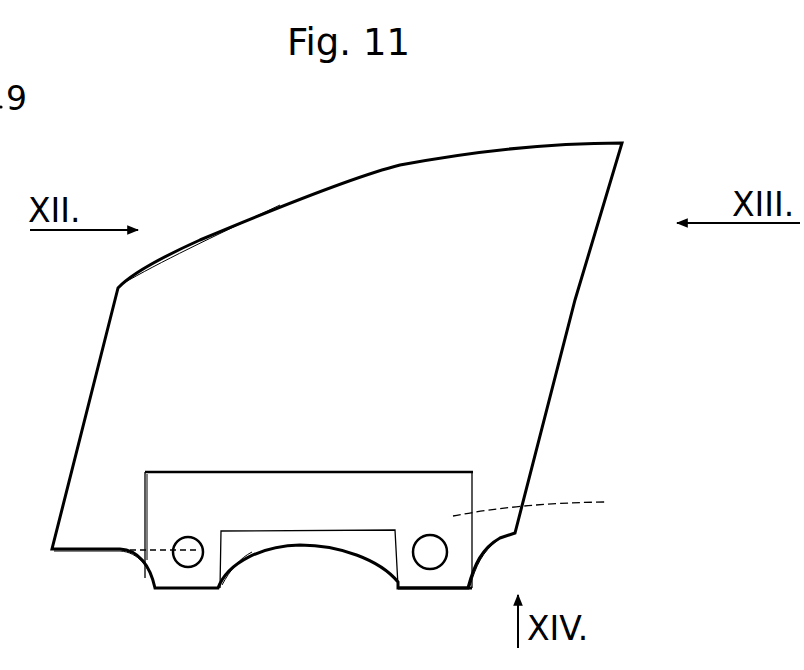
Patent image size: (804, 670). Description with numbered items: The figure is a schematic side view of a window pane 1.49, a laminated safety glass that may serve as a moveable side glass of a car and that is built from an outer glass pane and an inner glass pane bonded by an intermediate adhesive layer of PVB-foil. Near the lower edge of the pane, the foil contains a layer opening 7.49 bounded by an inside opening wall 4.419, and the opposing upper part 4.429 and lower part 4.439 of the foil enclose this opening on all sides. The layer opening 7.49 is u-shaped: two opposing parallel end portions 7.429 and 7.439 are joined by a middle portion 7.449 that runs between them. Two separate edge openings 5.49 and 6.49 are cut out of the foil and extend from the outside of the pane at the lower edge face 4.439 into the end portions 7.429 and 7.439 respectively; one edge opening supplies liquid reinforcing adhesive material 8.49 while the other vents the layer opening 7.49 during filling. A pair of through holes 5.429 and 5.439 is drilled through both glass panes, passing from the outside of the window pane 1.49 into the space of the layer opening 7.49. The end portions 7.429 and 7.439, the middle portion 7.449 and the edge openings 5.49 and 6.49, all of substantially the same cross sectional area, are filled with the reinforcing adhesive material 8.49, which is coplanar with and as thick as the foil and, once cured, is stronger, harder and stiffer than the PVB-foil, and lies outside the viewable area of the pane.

The window pane 1.49 is at (612, 192).
The upper part of the intermediate adhesive layer 4.429 is at (218, 282).
The inside opening wall 4.419 is at (417, 467).
The lower part of the intermediate adhesive layer 4.439 is at (103, 556).
The layer opening 7.49 is at (458, 487).
The middle portion of the layer opening 7.449 is at (302, 494).
The end portion of the layer opening 7.429 is at (193, 512).
The end portion of the layer opening 7.439 is at (408, 578).
The reinforcing adhesive material 8.49 is at (569, 502).
The edge opening 5.49 is at (188, 583).
The through hole 5.429 is at (185, 555).
The through hole 5.439 is at (440, 549).
The edge opening 6.49 is at (438, 583).